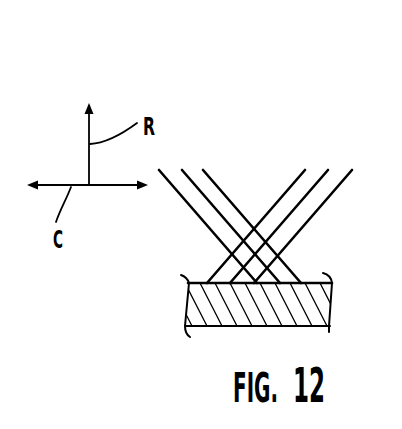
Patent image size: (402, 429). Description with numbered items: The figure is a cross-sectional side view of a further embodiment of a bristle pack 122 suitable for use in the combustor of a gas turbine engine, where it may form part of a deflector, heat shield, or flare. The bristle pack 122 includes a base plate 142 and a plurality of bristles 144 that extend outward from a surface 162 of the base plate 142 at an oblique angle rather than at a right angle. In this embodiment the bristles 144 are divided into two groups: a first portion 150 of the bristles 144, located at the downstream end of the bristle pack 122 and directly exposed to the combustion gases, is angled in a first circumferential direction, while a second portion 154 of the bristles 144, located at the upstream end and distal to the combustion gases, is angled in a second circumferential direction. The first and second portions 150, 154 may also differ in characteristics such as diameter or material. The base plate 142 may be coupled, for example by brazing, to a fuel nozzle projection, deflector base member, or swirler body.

The bristle pack 122 is at (176, 92).
The bristles 144 is at (266, 155).
The first portion of the bristles 150 is at (229, 198).
The second portion of the bristles 154 is at (279, 202).
The surface 162 is at (225, 283).
The base plate 142 is at (203, 338).